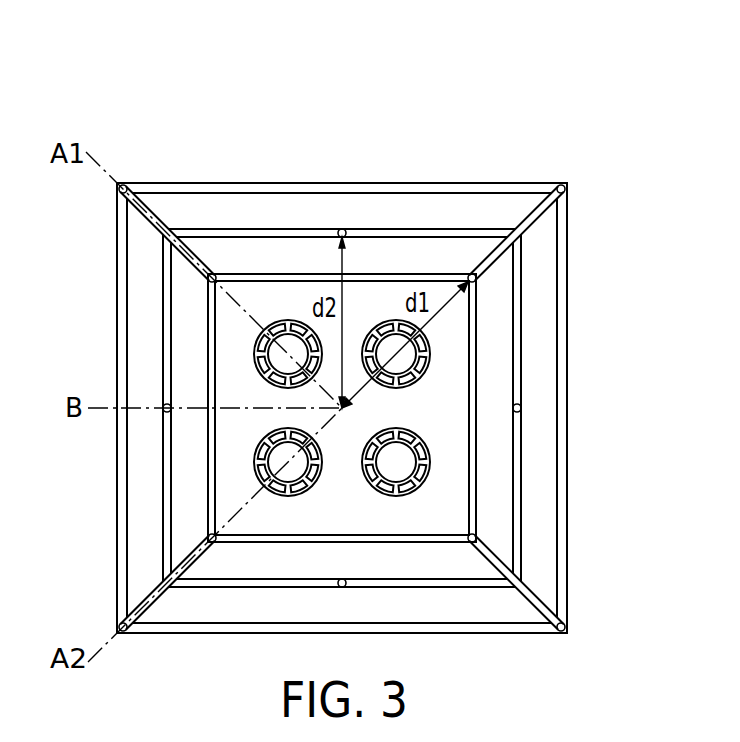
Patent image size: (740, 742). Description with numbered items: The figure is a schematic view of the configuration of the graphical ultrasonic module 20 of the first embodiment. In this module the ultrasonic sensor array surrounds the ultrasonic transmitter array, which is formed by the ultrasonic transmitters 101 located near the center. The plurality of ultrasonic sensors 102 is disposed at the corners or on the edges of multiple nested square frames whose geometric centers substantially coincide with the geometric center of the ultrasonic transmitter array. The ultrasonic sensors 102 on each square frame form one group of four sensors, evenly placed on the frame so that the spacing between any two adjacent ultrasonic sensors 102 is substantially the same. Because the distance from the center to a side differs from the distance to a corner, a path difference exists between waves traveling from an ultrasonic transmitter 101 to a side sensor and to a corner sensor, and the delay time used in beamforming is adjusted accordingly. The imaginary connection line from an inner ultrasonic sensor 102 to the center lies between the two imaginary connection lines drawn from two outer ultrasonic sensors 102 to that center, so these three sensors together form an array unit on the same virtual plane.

The graphical ultrasonic module 20 is at (98, 117).
The ultrasonic transmitter 101 is at (430, 447).
The ultrasonic sensor 102 is at (521, 408).